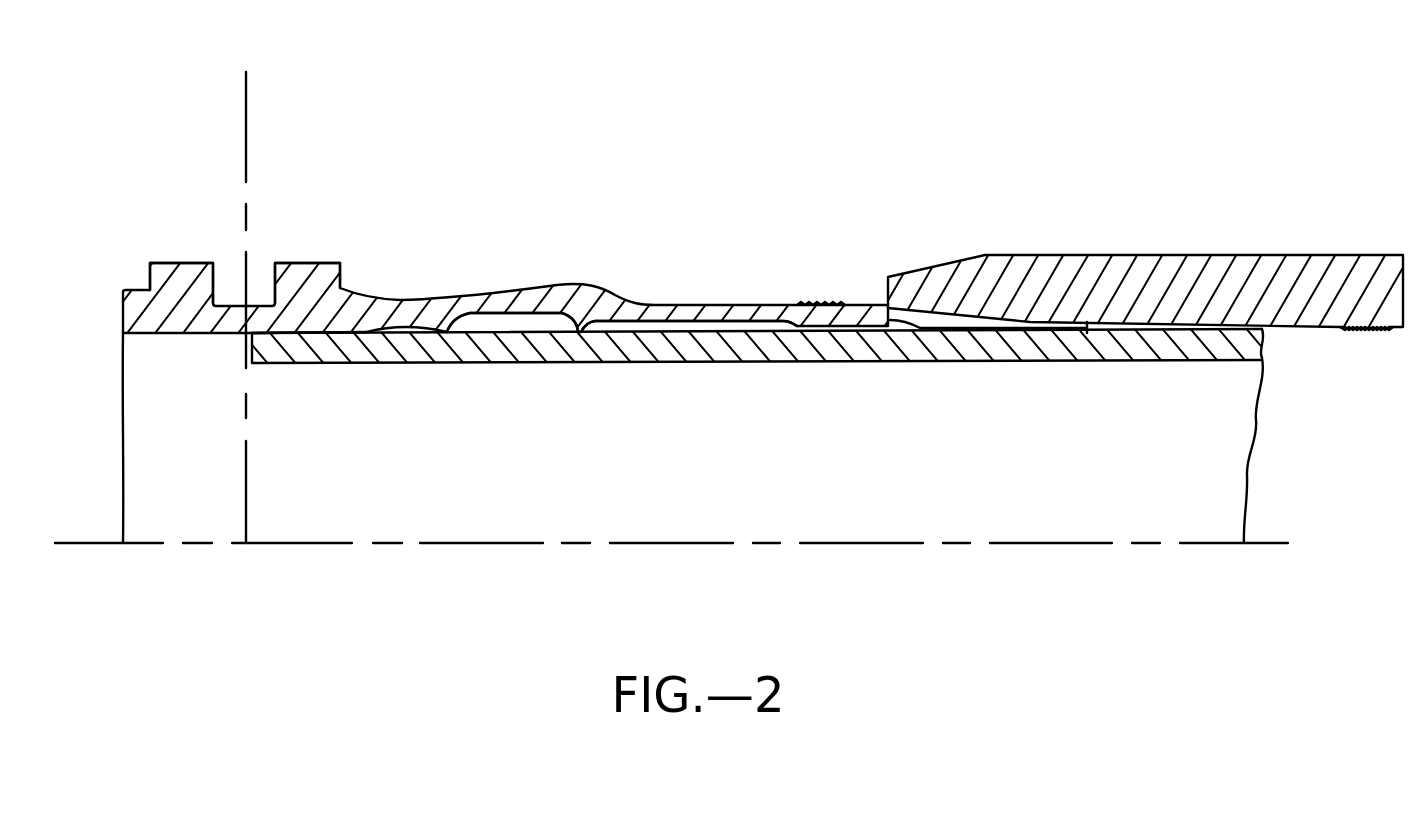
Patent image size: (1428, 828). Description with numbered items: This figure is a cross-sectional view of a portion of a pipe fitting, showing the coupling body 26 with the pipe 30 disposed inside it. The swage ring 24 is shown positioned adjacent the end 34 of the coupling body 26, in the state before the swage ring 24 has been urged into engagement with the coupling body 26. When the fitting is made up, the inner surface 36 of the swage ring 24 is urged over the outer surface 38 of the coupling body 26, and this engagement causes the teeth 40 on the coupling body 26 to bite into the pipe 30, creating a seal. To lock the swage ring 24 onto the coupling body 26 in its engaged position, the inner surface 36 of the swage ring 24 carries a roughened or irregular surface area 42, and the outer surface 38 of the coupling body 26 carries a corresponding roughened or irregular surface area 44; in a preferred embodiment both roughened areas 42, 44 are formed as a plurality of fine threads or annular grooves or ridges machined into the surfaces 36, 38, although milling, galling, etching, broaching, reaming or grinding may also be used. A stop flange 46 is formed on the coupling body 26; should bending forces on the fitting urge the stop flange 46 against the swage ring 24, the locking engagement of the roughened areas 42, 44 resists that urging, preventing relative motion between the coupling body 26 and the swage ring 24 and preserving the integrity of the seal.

The swage ring 24 is at (1007, 255).
The coupling body 26 is at (318, 346).
The pipe 30 is at (370, 353).
The end of the coupling body 34 is at (913, 324).
The inner surface of the swage ring 36 is at (1087, 324).
The outer surface of the coupling body 38 is at (650, 303).
The teeth 40 is at (497, 349).
The roughened or irregular surface area of the swage ring 42 is at (1362, 328).
The roughened or irregular surface area of the coupling body 44 is at (820, 305).
The stop flange 46 is at (295, 262).